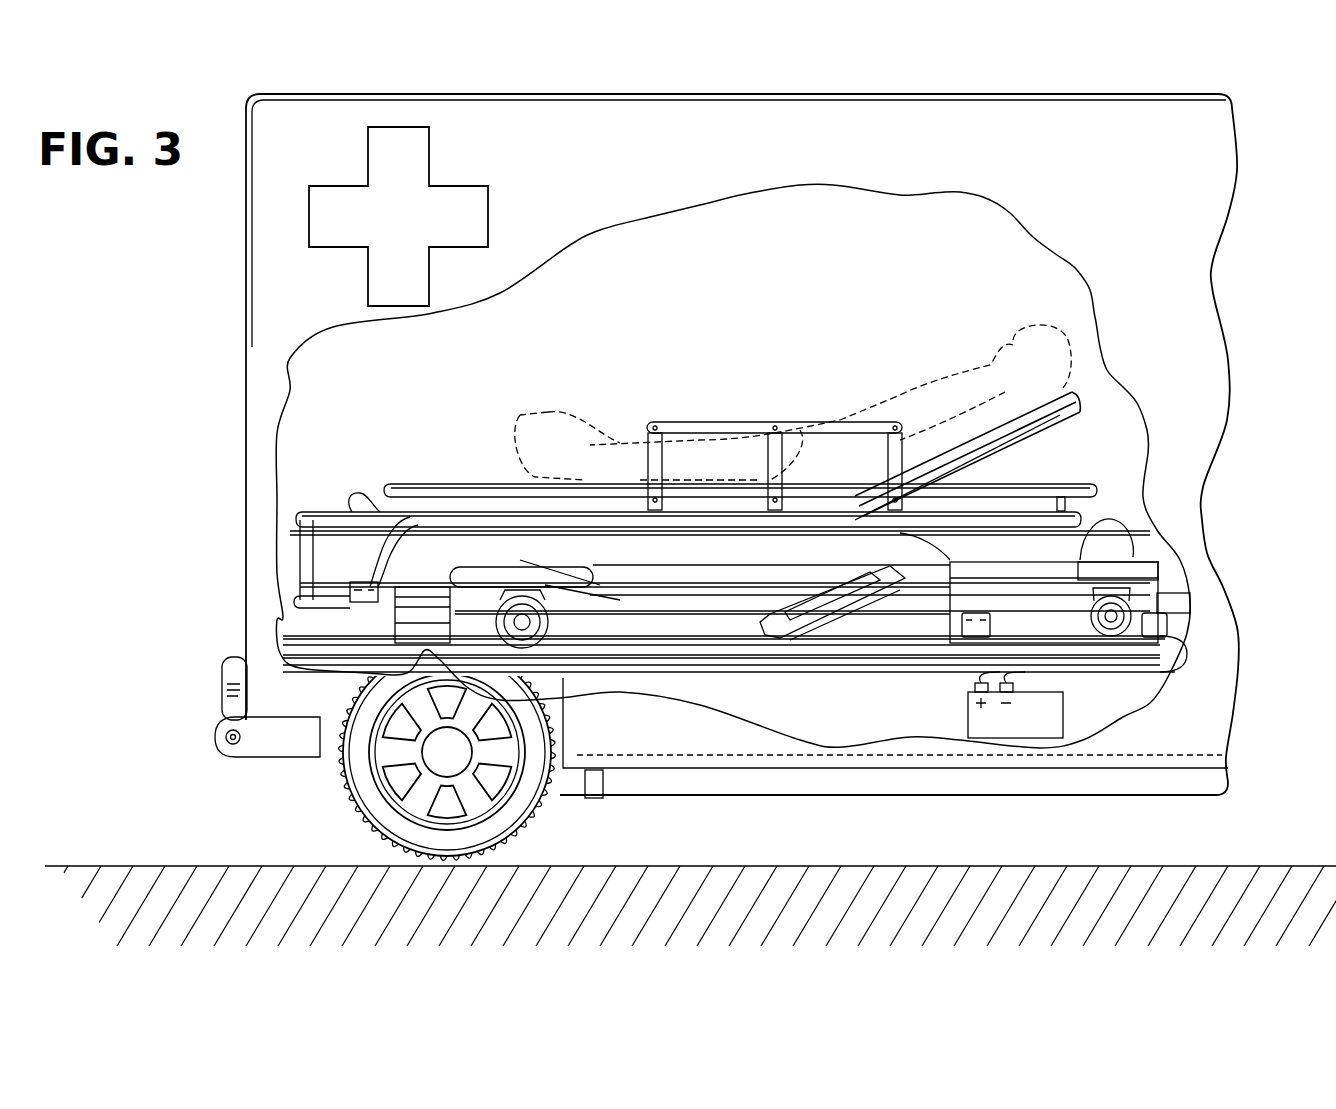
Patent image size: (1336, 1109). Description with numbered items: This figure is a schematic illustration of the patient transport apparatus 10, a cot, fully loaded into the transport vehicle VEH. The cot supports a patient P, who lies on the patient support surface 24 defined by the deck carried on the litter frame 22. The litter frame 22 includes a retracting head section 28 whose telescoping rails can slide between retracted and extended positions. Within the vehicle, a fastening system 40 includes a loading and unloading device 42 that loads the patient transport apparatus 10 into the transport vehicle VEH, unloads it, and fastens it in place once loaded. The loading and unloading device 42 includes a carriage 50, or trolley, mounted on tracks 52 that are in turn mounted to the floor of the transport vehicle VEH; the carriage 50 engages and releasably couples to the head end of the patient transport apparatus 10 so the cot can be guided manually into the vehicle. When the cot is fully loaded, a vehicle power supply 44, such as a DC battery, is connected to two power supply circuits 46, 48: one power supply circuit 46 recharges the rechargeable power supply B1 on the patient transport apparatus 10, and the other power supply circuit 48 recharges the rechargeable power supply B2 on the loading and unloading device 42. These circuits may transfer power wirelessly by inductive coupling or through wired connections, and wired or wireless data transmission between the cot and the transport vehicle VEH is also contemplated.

The transport vehicle VEH is at (430, 88).
The patient transport apparatus 10 is at (320, 492).
The litter frame 22 is at (583, 500).
The patient support surface 24 is at (1017, 393).
The retracting head section 28 is at (975, 482).
The fastening system 40 is at (1015, 548).
The loading and unloading device 42 is at (810, 593).
The vehicle power supply 44 is at (1033, 723).
The power supply circuit 46 is at (797, 673).
The power supply circuit 48 is at (1100, 673).
The carriage 50 is at (1145, 560).
The tracks 52 is at (590, 590).
The rechargeable power supply B1 is at (368, 563).
The rechargeable power supply B2 is at (975, 612).
The patient P is at (910, 383).